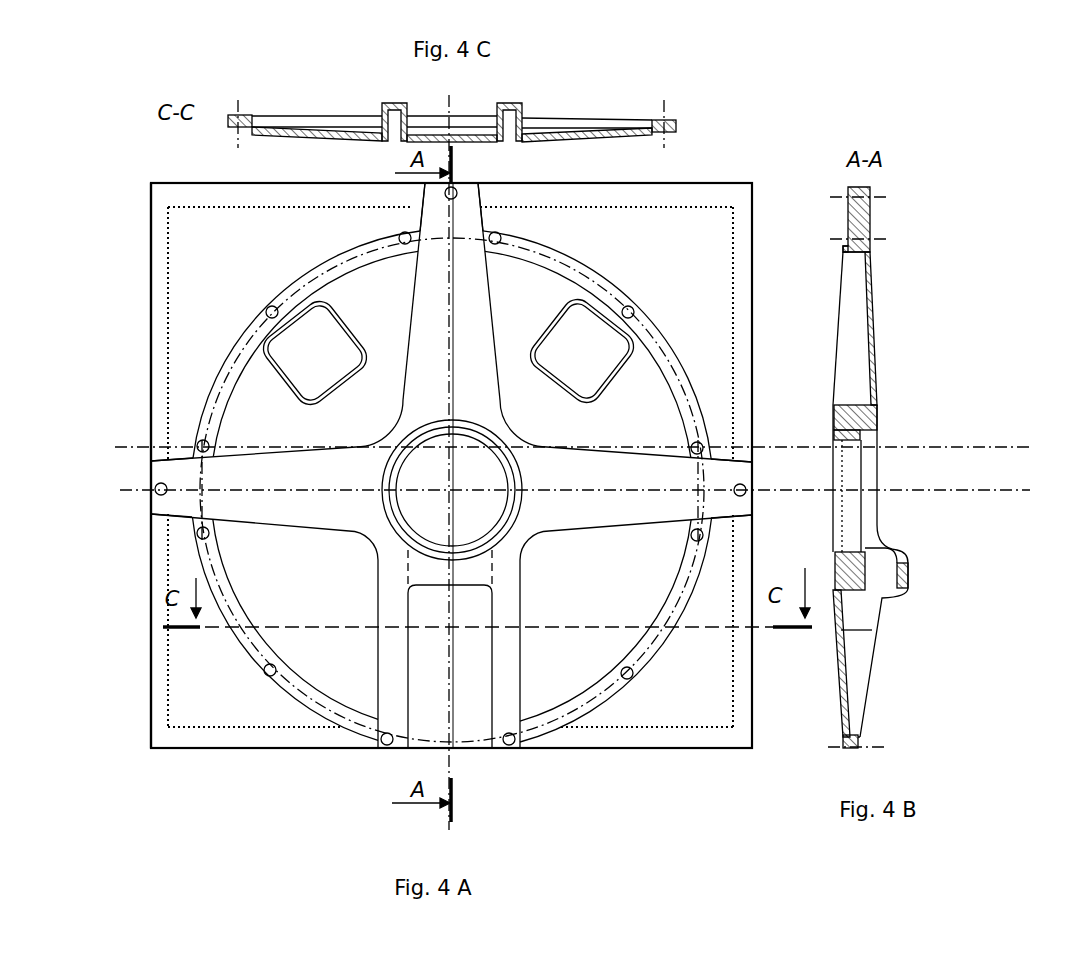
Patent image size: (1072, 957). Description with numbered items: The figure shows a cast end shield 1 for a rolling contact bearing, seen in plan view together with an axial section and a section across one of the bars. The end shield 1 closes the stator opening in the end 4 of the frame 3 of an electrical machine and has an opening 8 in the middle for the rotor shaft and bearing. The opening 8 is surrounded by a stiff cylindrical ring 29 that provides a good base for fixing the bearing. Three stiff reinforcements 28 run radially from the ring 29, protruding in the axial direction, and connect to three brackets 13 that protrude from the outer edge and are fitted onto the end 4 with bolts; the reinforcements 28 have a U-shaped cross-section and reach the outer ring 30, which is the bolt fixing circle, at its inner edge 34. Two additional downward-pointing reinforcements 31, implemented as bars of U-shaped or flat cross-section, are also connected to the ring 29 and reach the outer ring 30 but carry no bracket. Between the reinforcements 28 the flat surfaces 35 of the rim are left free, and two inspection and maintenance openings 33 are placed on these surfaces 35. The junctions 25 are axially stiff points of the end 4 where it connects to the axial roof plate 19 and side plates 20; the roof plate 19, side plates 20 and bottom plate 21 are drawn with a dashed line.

In FIG. 4A, the end shield 1 is at (318, 635).
In FIG. 4A, the frame 3 is at (150, 332).
In FIG. 4A, the end 4 is at (695, 272).
In FIG. 4A, the opening 8 is at (470, 520).
In FIG. 4A, the brackets 13 is at (463, 216).
In FIG. 4A, the roof plate 19 is at (183, 195).
In FIG. 4A, the side plates 20 is at (155, 260).
In FIG. 4A, the bottom plate 21 is at (635, 733).
In FIG. 4A, the junctions 25 is at (463, 192).
In FIG. 4A, the reinforcements 28 is at (336, 478).
In FIG. 4B, the reinforcements 28 is at (873, 297).
In FIG. 4B, the ring 29 is at (872, 418).
In FIG. 4A, the outer ring 30 is at (650, 653).
In FIG. 4A, the additional reinforcements 31 is at (390, 588).
In FIG. 4C, the additional reinforcements 31 is at (382, 103).
In FIG. 4A, the inspection and maintenance openings 33 is at (298, 363).
In FIG. 4B, the inner edge 34 is at (843, 248).
In FIG. 4A, the surfaces 35 is at (348, 406).